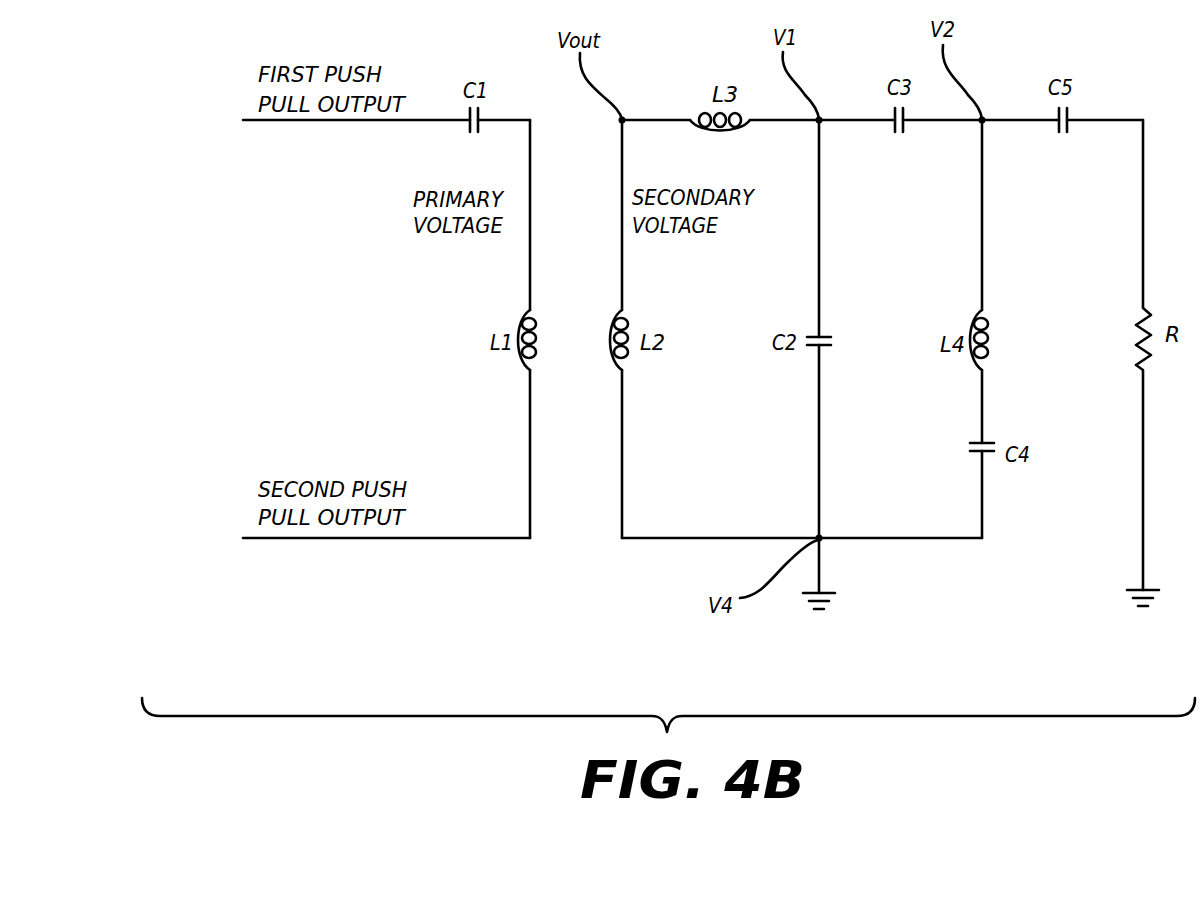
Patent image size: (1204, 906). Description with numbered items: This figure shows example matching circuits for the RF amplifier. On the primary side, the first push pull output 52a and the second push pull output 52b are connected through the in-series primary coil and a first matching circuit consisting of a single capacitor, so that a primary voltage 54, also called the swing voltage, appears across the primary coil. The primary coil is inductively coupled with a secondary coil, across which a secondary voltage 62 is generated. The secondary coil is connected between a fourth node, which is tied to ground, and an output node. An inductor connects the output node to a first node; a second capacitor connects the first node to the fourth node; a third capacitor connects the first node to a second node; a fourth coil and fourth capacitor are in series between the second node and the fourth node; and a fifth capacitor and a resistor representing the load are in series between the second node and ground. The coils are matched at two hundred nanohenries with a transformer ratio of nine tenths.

The first push pull output 52a is at (278, 121).
The second push pull output 52b is at (282, 539).
The primary voltage 54 is at (530, 246).
The secondary voltage 62 is at (622, 250).